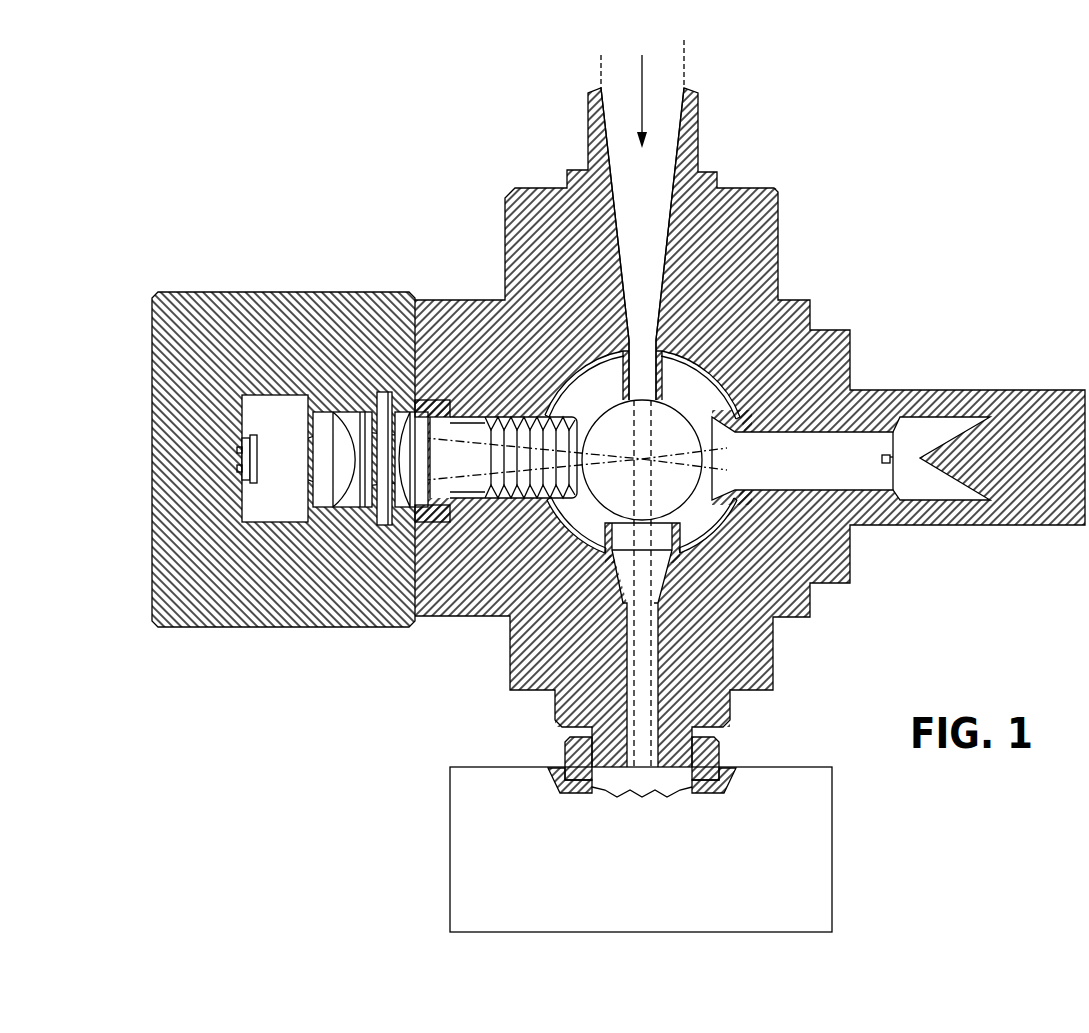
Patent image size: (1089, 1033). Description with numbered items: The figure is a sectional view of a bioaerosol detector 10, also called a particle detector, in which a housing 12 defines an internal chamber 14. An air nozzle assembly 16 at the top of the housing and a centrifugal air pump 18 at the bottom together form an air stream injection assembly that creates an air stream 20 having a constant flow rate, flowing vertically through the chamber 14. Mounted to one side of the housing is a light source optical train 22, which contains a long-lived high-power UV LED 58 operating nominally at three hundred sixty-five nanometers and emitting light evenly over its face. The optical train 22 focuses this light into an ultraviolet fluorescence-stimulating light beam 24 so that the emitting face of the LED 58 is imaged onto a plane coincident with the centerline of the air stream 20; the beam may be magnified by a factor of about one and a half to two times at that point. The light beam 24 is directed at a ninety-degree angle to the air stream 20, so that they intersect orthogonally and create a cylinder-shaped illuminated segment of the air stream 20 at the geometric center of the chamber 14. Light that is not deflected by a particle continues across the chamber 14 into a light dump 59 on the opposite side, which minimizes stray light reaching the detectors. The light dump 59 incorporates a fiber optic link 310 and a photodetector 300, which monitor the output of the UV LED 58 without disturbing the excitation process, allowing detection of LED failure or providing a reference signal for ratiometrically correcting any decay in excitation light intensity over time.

The bioaerosol detector 10 is at (890, 118).
The housing 12 is at (783, 233).
The chamber 14 is at (694, 512).
The air nozzle assembly 16 is at (617, 240).
The centrifugal air pump 18 is at (654, 866).
The air stream 20 is at (634, 425).
The light source optical train 22 is at (331, 378).
The light beam 24 is at (678, 452).
The UV LED 58 is at (258, 443).
The light dump 59 is at (827, 474).
The photodetector 300 is at (882, 457).
The fiber optic link 310 is at (889, 453).